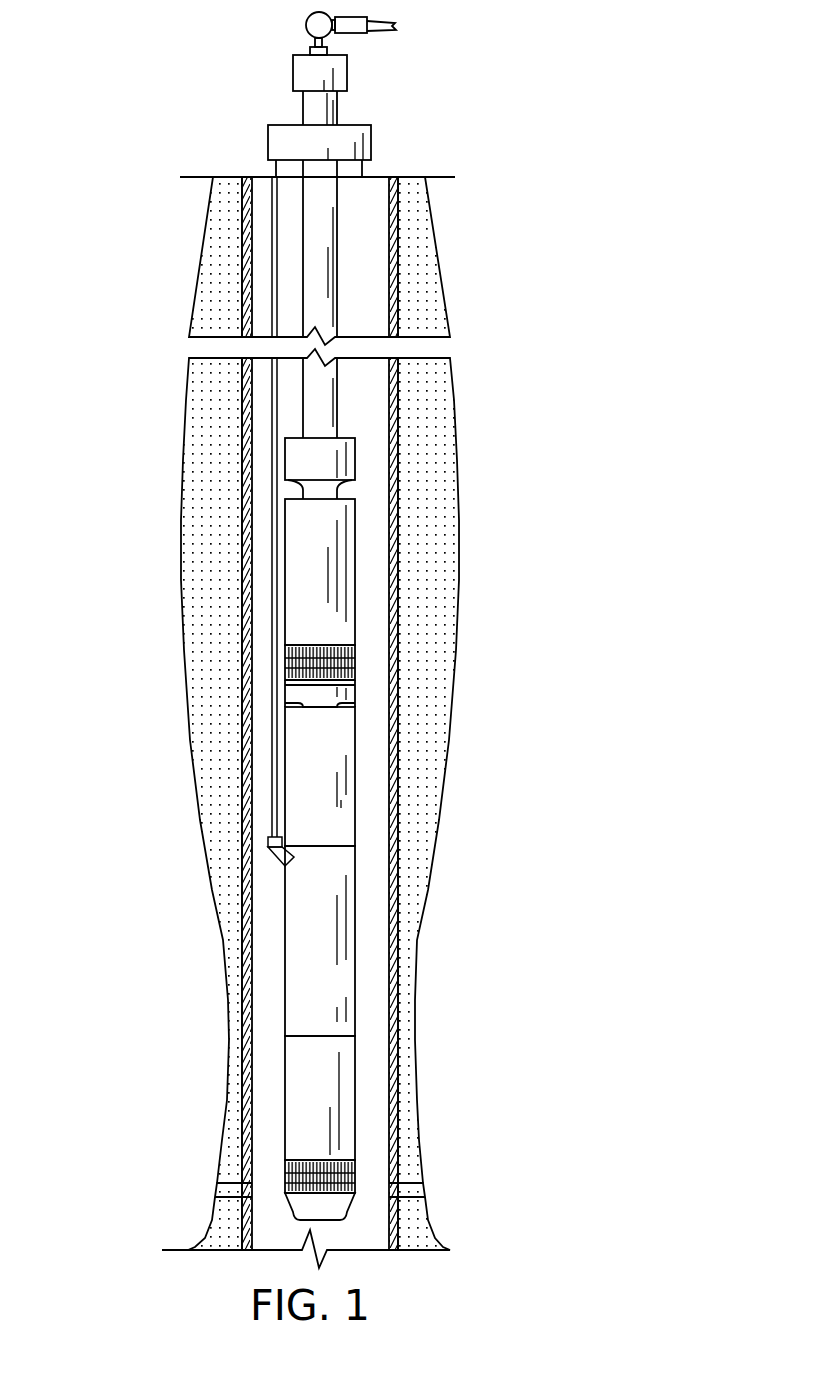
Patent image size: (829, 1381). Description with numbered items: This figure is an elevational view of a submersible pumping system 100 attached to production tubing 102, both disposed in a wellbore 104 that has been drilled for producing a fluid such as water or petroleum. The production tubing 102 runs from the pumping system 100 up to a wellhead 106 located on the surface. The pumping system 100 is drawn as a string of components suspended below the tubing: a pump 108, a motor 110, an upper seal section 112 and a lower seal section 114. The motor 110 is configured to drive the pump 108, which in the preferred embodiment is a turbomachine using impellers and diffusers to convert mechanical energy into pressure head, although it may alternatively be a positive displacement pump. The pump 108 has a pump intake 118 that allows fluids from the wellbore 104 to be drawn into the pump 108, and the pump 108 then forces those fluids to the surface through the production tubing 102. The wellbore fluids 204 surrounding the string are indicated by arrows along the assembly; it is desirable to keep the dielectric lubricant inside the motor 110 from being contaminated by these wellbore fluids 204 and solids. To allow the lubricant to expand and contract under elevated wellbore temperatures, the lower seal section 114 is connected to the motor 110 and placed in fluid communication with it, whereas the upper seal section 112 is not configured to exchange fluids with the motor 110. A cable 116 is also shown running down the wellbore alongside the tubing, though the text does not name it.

The pumping system 100 is at (368, 859).
The production tubing 102 is at (337, 220).
The wellbore 104 is at (398, 295).
The wellhead 106 is at (297, 76).
The pump 108 is at (357, 627).
The motor 110 is at (357, 1007).
The upper seal section 112 is at (357, 738).
The lower seal section 114 is at (357, 1115).
The power cable 116 is at (270, 747).
The pump intake 118 is at (287, 653).
The wellbore fluids 204 is at (378, 492).